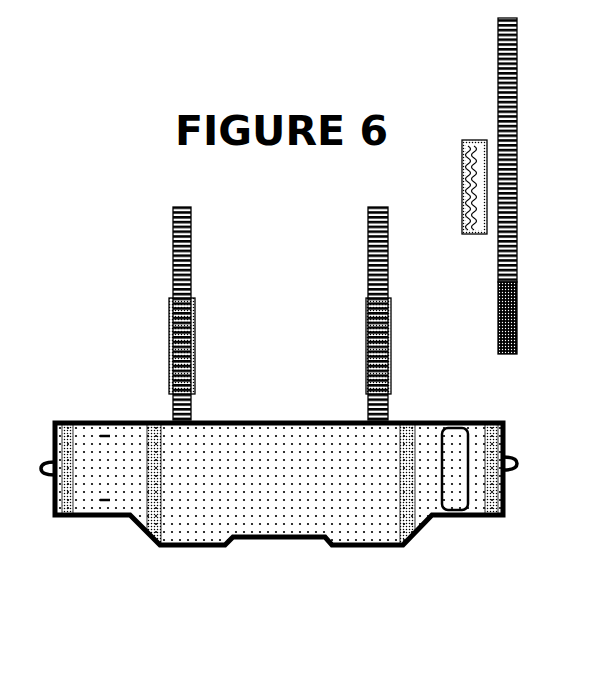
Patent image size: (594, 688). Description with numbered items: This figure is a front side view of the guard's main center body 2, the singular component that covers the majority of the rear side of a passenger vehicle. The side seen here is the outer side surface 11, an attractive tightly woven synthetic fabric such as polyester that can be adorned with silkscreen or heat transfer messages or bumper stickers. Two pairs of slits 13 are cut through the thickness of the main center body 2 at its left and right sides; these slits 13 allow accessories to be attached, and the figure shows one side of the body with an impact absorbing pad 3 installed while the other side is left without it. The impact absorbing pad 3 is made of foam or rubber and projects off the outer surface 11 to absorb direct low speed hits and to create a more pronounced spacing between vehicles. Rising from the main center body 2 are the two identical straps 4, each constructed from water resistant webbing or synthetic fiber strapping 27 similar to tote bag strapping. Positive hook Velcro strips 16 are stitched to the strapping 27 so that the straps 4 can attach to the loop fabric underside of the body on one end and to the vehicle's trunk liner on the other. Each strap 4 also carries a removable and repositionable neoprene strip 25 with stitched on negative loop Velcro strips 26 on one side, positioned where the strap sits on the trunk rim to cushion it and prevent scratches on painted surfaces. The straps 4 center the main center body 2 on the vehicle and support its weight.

The main center body 2 is at (279, 501).
The impact absorbing pad 3 is at (453, 533).
The strap 4 is at (343, 245).
The outer side surface 11 is at (237, 477).
The slits 13 is at (105, 434).
The positive/hook Velcro strips 16 is at (498, 318).
The neoprene strip 25 is at (169, 336).
The negative/loop Velcro strips 26 is at (470, 195).
The webbing/synthetic fiber strapping 27 is at (173, 253).